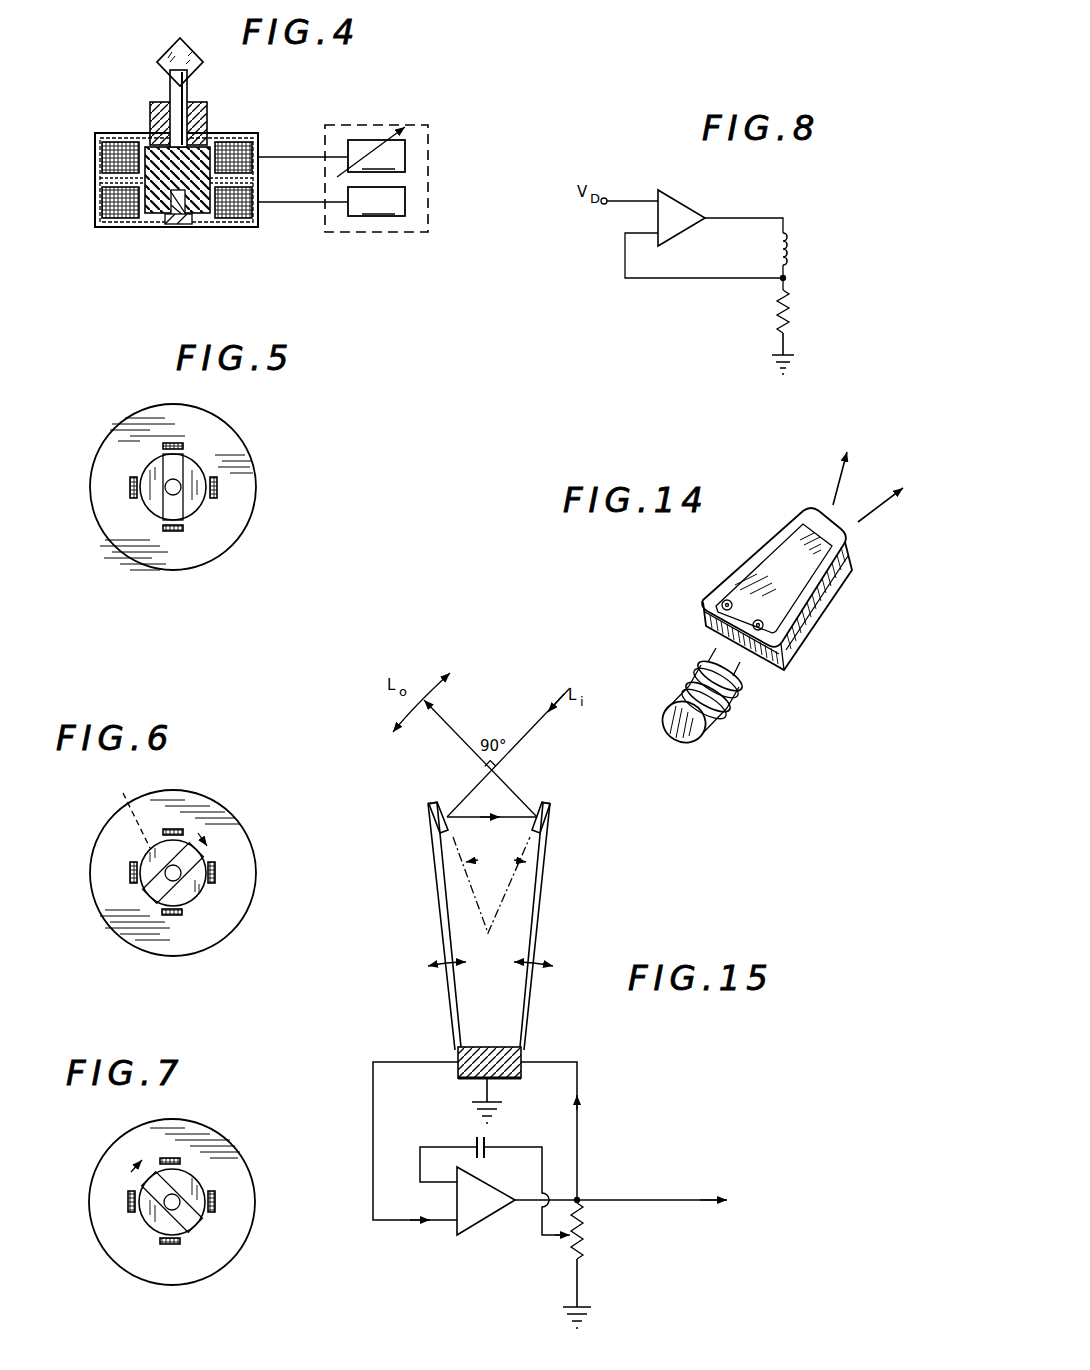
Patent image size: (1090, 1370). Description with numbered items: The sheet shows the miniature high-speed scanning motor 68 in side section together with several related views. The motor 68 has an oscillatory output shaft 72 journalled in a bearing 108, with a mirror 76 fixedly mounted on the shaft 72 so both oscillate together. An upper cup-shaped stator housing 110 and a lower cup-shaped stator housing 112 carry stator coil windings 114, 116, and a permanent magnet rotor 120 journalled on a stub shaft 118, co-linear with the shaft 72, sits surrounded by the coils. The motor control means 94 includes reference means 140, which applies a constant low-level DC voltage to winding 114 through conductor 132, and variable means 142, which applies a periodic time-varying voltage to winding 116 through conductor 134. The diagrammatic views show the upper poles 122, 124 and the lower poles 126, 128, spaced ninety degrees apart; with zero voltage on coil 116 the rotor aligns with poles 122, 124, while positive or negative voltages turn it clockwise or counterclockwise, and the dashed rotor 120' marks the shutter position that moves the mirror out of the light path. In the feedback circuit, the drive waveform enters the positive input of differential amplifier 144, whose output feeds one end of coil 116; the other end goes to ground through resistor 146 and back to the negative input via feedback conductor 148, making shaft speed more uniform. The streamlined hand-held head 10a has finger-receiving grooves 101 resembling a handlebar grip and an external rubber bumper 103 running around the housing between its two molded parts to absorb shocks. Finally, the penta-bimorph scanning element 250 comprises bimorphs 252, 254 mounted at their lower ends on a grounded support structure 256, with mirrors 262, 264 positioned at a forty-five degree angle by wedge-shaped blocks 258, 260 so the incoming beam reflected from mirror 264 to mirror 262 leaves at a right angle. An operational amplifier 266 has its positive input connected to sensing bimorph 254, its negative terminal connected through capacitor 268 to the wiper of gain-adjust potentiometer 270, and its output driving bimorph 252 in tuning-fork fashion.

In FIG. 4, the X-axis scanning motor 68 is at (165, 146).
In FIG. 5, the X-axis scanning motor 68 is at (294, 457).
In FIG. 6, the X-axis scanning motor 68 is at (277, 815).
In FIG. 7, the X-axis scanning motor 68 is at (266, 1162).
In FIG. 4, the output shaft 72 is at (189, 98).
In FIG. 5, the output shaft 72 is at (181, 490).
In FIG. 6, the output shaft 72 is at (190, 878).
In FIG. 7, the output shaft 72 is at (187, 1203).
In FIG. 4, the mirror 76 is at (171, 54).
In FIG. 4, the motor control means 94 is at (378, 159).
In FIG. 4, the bearing 108 is at (150, 108).
In FIG. 4, the upper cup-shaped stator housing 110 is at (96, 140).
In FIG. 4, the lower cup-shaped stator housing 112 is at (90, 230).
In FIG. 4, the stator coil winding 114 is at (238, 137).
In FIG. 4, the stator coil winding 116 is at (236, 214).
In FIG. 8, the stator coil winding 116 is at (787, 236).
In FIG. 4, the stub shaft 118 is at (173, 226).
In FIG. 4, the permanent magnet rotor 120 is at (158, 211).
In FIG. 6, the rotor in shutter position 120' is at (117, 810).
In FIG. 5, the upper stator pole 122 is at (185, 445).
In FIG. 6, the upper stator pole 122 is at (182, 832).
In FIG. 7, the upper stator pole 122 is at (178, 1160).
In FIG. 5, the upper stator pole 124 is at (182, 531).
In FIG. 6, the upper stator pole 124 is at (180, 915).
In FIG. 7, the upper stator pole 124 is at (182, 1244).
In FIG. 5, the lower stator pole 126 is at (218, 492).
In FIG. 6, the lower stator pole 126 is at (214, 871).
In FIG. 7, the lower stator pole 126 is at (213, 1194).
In FIG. 5, the lower stator pole 128 is at (130, 481).
In FIG. 6, the lower stator pole 128 is at (132, 866).
In FIG. 7, the lower stator pole 128 is at (130, 1191).
In FIG. 4, the conductor 132 is at (308, 156).
In FIG. 4, the conductor 134 is at (304, 200).
In FIG. 4, the reference means 140 is at (376, 156).
In FIG. 4, the variable means 142 is at (376, 201).
In FIG. 8, the differential amplifier 144 is at (688, 204).
In FIG. 8, the resistor 146 is at (787, 307).
In FIG. 8, the feedback conductor 148 is at (673, 280).
In FIG. 14, the streamlined head 10a is at (759, 629).
In FIG. 14, the finger-receiving grooves 101 is at (728, 710).
In FIG. 14, the external rubber bumper 103 is at (818, 640).
In FIG. 15, the penta-bimorph scanning element 250 is at (480, 906).
In FIG. 15, the bimorph 252 is at (548, 877).
In FIG. 15, the bimorph 254 is at (442, 890).
In FIG. 15, the grounded support structure 256 is at (485, 1045).
In FIG. 15, the wedge-shaped block 258 is at (548, 831).
In FIG. 15, the wedge-shaped block 260 is at (438, 829).
In FIG. 15, the light-reflecting mirror 262 is at (542, 803).
In FIG. 15, the light-reflecting mirror 264 is at (447, 788).
In FIG. 15, the operational amplifier 266 is at (487, 1223).
In FIG. 15, the capacitor 268 is at (478, 1137).
In FIG. 15, the gain-adjust potentiometer 270 is at (583, 1238).